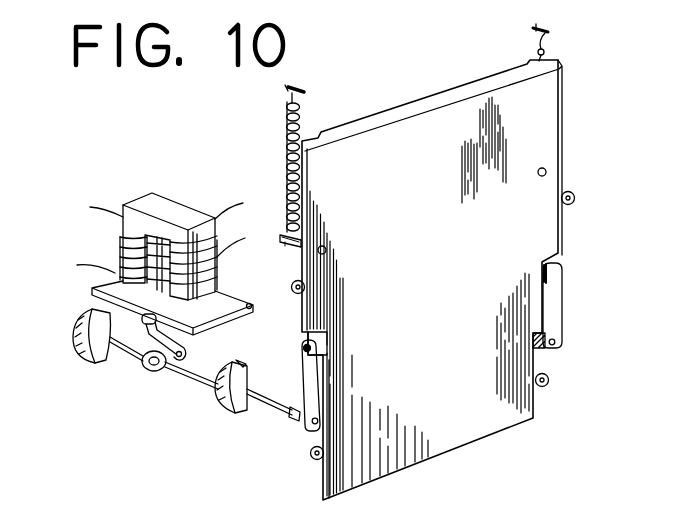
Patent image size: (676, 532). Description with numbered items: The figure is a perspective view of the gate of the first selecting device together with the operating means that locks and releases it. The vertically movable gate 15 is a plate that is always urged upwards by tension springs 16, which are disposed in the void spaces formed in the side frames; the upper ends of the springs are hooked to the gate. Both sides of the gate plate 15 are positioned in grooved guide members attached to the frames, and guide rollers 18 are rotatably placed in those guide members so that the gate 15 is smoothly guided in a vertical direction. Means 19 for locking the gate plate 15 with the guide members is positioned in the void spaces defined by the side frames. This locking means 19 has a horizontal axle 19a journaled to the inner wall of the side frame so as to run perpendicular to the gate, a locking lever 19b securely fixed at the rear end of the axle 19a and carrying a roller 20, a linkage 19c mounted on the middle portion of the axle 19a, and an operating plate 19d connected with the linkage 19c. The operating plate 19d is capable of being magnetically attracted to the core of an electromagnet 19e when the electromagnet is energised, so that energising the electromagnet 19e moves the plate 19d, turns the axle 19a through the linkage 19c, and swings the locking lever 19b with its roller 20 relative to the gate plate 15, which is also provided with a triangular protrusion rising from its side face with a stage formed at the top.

The gate 15 is at (497, 428).
The tension springs 16 is at (286, 126).
The guide rollers 18 is at (290, 282).
The locking means 19 is at (261, 411).
The horizontal axle 19a is at (114, 355).
The locking lever 19b is at (307, 382).
The linkage 19c is at (182, 344).
The operating plate 19d is at (100, 288).
The electromagnet 19e is at (189, 210).
The roller 20 is at (300, 338).